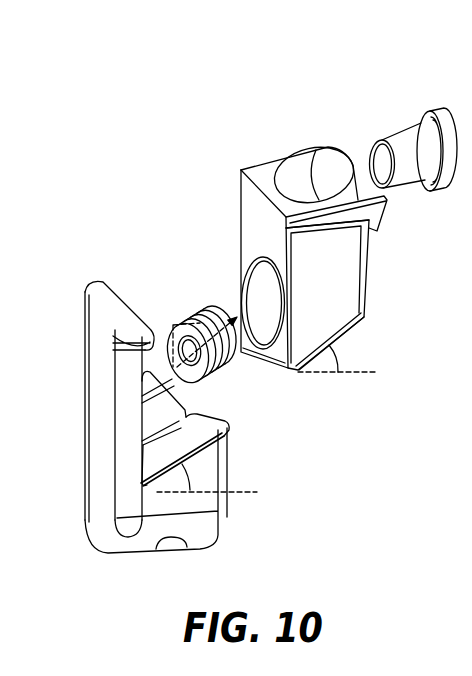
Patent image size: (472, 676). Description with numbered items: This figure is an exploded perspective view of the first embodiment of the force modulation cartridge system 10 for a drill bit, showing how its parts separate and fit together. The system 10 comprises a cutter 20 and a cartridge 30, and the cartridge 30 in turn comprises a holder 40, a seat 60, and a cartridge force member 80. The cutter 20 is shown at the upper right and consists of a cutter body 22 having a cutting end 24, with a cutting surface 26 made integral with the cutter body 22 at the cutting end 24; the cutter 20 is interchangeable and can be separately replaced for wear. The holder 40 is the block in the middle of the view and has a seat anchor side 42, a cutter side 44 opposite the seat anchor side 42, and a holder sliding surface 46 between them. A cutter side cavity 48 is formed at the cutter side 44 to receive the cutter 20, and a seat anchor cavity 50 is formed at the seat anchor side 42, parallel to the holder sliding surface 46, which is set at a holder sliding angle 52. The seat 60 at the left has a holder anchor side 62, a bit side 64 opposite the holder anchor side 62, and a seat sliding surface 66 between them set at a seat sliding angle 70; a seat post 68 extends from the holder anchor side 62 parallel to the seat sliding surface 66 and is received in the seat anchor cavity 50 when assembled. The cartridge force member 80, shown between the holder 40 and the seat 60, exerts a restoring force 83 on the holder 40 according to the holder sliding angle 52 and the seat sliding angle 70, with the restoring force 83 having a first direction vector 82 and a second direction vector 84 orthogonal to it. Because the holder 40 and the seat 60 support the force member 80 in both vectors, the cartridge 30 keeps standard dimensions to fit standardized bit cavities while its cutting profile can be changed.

The force modulation cartridge system 10 is at (134, 68).
The cutter 20 is at (399, 122).
The cutter body 22 is at (389, 136).
The cutting end 24 is at (418, 123).
The cutting surface 26 is at (441, 117).
The cartridge 30 is at (237, 112).
The holder 40 is at (250, 188).
The seat anchor side 42 is at (244, 225).
The cutter side 44 is at (369, 267).
The holder sliding surface 46 is at (346, 337).
The cutter side cavity 48 is at (316, 160).
The seat anchor cavity 50 is at (257, 285).
The holder sliding angle 52 is at (350, 374).
The seat 60 is at (90, 312).
The holder anchor side 62 is at (127, 553).
The bit side 64 is at (140, 380).
The seat sliding surface 66 is at (170, 452).
The seat post 68 is at (155, 407).
The seat sliding angle 70 is at (242, 495).
The cartridge force member 80 is at (213, 372).
The first direction vector 82 is at (113, 343).
The restoring force 83 is at (236, 365).
The second direction vector 84 is at (190, 322).